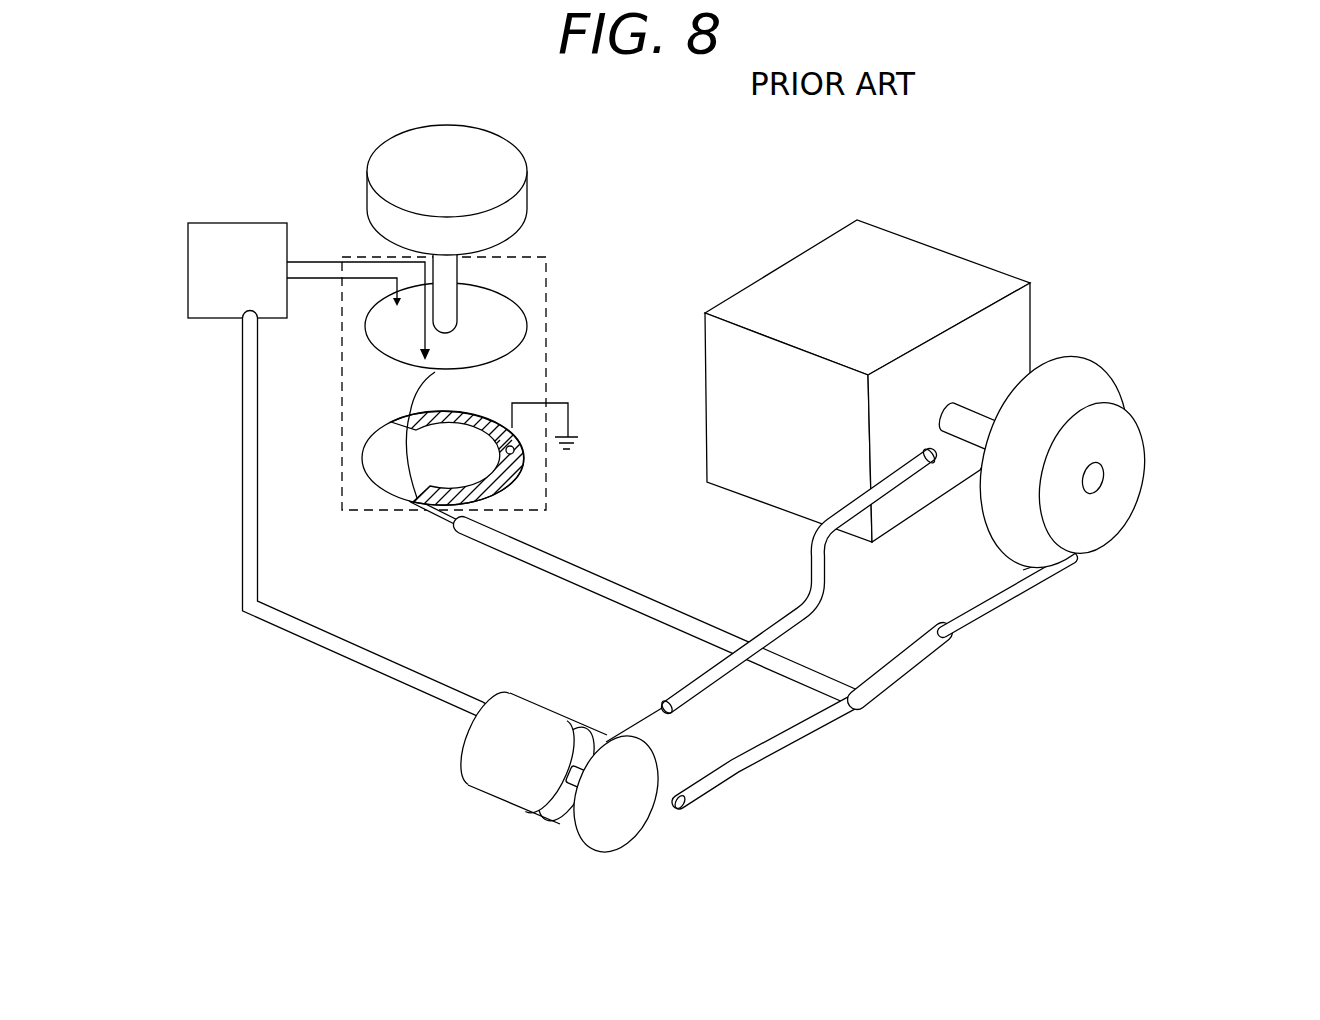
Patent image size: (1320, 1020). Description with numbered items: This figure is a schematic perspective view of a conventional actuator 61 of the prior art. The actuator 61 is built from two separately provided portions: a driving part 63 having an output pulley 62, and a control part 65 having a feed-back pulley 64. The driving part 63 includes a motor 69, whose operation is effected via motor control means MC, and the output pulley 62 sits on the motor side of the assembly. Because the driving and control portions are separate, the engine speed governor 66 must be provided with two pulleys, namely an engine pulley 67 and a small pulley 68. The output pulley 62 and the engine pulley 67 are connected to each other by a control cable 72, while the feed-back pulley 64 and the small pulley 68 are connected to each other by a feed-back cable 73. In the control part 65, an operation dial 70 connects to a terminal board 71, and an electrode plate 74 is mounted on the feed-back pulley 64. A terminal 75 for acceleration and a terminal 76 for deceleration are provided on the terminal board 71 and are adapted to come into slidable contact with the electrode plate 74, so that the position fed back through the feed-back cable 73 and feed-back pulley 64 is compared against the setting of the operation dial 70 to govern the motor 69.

The actuator 61 is at (229, 204).
The output pulley 62 is at (585, 828).
The driving part 63 is at (368, 750).
The feed-back pulley 64 is at (452, 447).
The control part 65 is at (641, 172).
The engine speed governor 66 is at (935, 258).
The engine pulley 67 is at (1112, 390).
The small pulley 68 is at (1128, 470).
The motor 69 is at (472, 748).
The operation dial 70 is at (518, 210).
The terminal board 71 is at (488, 310).
The control cable 72 is at (653, 828).
The feed-back cable 73 is at (442, 515).
The electrode plate 74 is at (500, 477).
The terminal for acceleration 75 is at (397, 303).
The terminal for deceleration 76 is at (433, 372).